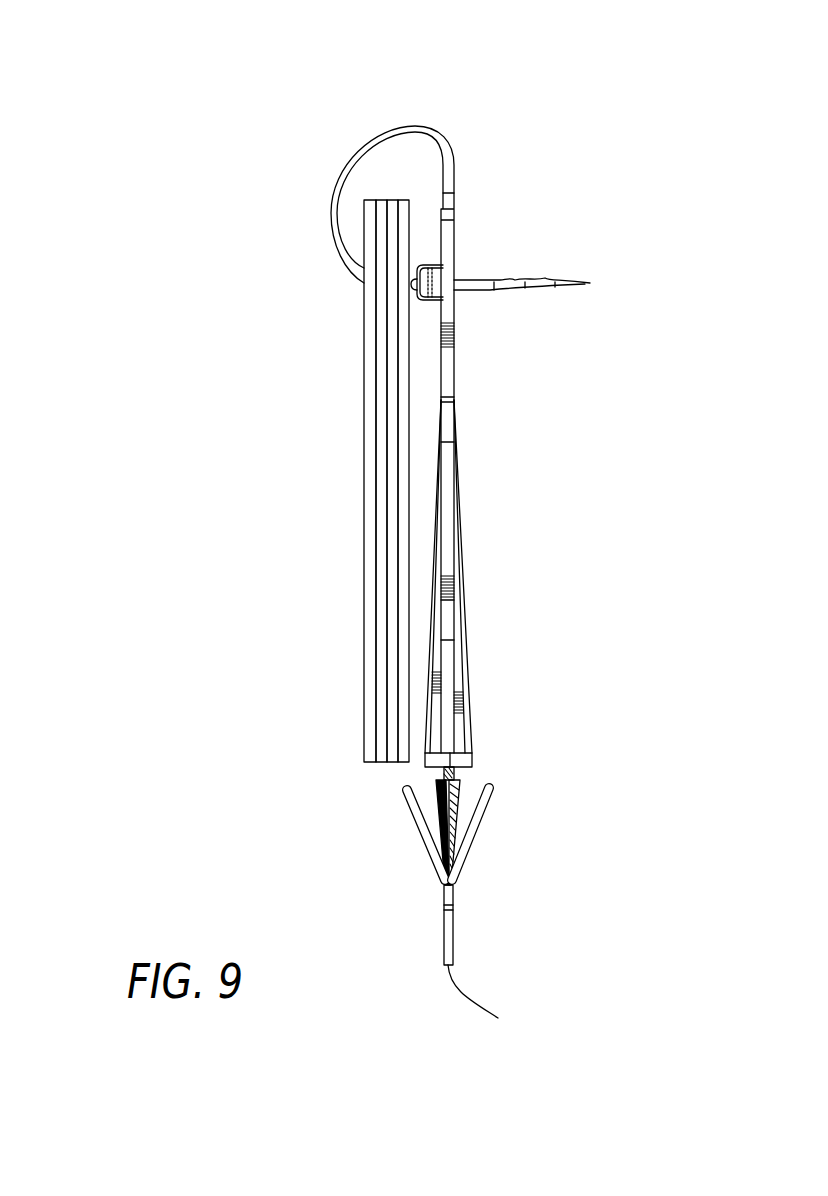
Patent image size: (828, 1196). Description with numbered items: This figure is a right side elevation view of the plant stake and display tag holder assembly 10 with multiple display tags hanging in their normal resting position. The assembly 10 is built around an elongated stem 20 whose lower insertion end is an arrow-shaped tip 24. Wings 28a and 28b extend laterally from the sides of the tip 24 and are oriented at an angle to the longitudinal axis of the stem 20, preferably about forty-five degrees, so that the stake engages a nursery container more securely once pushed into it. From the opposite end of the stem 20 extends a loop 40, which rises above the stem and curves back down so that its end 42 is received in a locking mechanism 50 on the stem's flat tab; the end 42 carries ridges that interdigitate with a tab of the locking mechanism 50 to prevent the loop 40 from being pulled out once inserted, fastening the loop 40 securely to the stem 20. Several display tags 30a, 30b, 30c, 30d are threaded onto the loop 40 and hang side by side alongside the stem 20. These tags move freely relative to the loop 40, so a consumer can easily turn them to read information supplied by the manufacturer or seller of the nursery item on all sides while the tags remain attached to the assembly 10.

The plant stake and display tag holder assembly 10 is at (200, 277).
The stem 20 is at (494, 458).
The tip 24 is at (498, 1018).
The wing 28a is at (410, 822).
The wing 28b is at (478, 830).
The display tag 30a is at (369, 438).
The display tag 30b is at (381, 496).
The display tag 30c is at (392, 576).
The display tag 30d is at (402, 655).
The loop 40 is at (412, 125).
The end 42 is at (590, 283).
The locking mechanism 50 is at (432, 281).